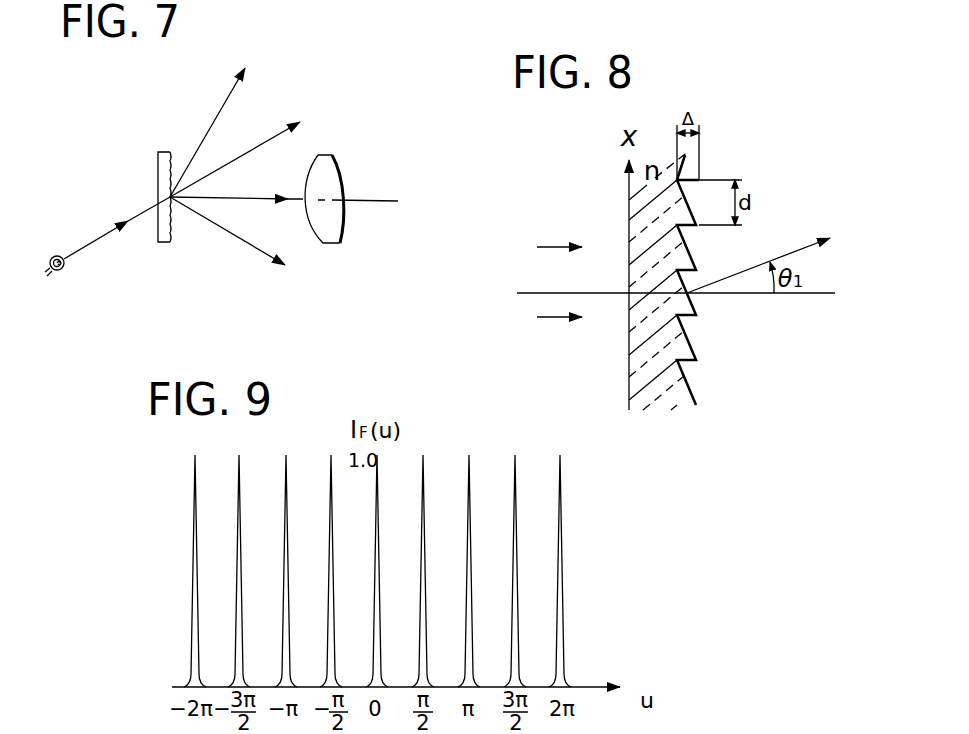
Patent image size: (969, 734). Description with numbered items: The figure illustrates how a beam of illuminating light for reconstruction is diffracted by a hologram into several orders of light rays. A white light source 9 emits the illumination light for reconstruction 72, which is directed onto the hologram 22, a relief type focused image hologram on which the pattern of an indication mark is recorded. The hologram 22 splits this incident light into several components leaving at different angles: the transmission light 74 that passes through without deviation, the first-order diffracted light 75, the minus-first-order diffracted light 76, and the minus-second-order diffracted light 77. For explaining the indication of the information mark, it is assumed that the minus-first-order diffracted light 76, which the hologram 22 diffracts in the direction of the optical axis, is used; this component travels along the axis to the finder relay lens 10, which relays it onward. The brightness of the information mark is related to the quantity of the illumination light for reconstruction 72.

The white light source 9 is at (58, 271).
The finder relay lens 10 is at (322, 245).
The hologram 22 is at (170, 233).
The illumination light for reconstruction 72 is at (103, 237).
The transmission light 74 is at (270, 140).
The 1st-order diffracted light 75 is at (228, 93).
The -1st-order diffracted light 76 is at (268, 197).
The -2nd-order diffracted light 77 is at (250, 247).